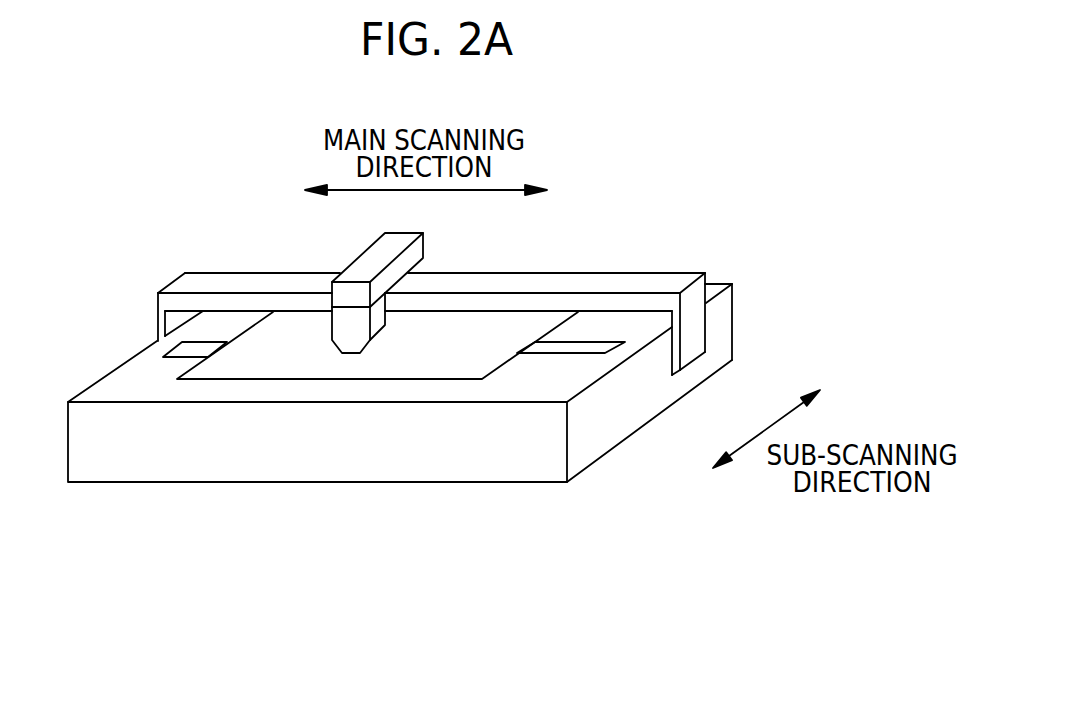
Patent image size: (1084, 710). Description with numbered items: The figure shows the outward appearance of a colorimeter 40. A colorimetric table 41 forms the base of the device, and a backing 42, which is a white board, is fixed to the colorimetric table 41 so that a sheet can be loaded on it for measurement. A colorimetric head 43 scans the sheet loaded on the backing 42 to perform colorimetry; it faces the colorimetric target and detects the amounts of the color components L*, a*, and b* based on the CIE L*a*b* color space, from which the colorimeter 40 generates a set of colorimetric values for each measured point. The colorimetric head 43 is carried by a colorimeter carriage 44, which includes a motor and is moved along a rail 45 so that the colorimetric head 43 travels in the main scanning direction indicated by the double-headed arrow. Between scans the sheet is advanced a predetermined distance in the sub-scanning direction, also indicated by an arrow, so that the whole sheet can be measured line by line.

The colorimeter 40 is at (632, 130).
The colorimetric table 41 is at (503, 467).
The backing 42 is at (587, 350).
The colorimetric head 43 is at (347, 323).
The colorimeter carriage 44 is at (420, 253).
The rail 45 is at (697, 296).